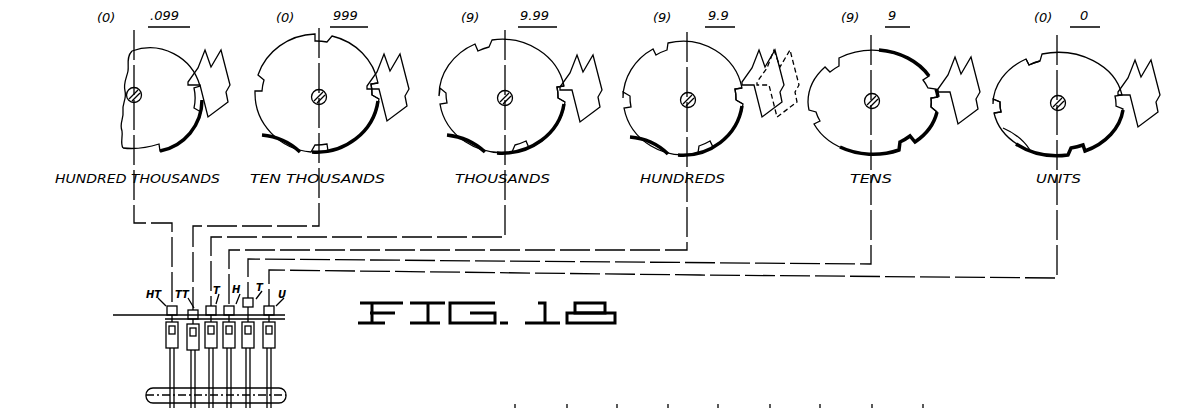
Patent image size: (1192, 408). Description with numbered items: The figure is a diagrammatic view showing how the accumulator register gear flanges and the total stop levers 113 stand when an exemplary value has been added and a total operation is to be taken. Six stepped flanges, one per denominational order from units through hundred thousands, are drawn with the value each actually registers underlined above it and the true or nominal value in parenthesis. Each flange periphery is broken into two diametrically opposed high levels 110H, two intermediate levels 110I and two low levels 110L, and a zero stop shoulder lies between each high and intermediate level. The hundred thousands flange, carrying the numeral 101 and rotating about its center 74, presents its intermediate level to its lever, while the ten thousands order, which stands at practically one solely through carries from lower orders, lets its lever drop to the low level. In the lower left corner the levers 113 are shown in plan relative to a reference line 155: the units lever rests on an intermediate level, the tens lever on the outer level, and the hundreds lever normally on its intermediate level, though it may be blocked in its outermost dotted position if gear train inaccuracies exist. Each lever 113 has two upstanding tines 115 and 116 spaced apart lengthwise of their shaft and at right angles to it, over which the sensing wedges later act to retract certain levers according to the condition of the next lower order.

The hundred thousands counter wheel 101 is at (161, 99).
The low level 110L is at (372, 96).
The intermediate level 110I is at (557, 96).
The high level 110H is at (745, 110).
The total stop lever 113 is at (1148, 62).
The counter wheel shaft 74 is at (1059, 108).
The reference line 155 is at (118, 315).
The tine 116 is at (282, 317).
The tine 115 is at (271, 348).